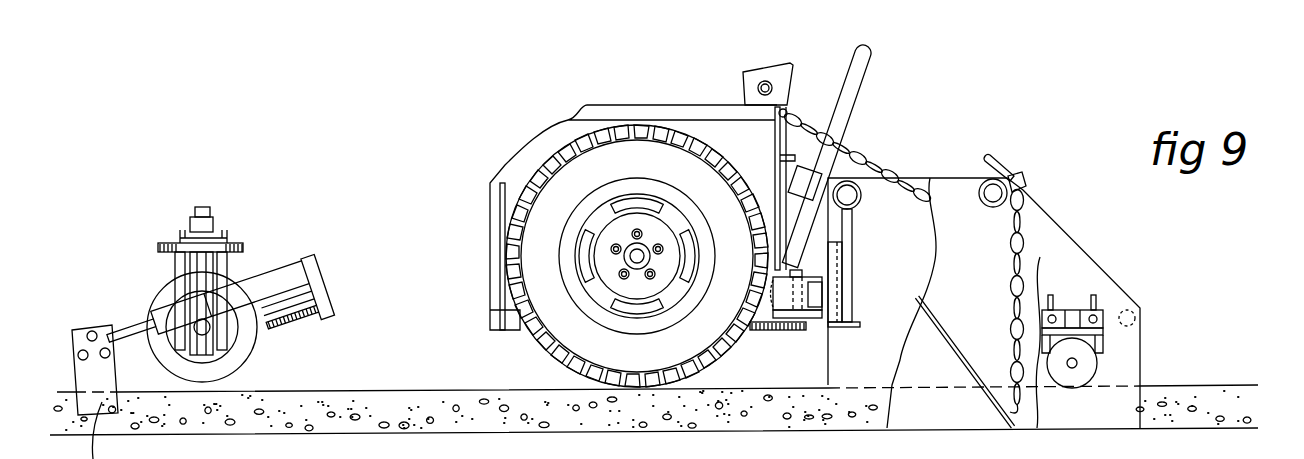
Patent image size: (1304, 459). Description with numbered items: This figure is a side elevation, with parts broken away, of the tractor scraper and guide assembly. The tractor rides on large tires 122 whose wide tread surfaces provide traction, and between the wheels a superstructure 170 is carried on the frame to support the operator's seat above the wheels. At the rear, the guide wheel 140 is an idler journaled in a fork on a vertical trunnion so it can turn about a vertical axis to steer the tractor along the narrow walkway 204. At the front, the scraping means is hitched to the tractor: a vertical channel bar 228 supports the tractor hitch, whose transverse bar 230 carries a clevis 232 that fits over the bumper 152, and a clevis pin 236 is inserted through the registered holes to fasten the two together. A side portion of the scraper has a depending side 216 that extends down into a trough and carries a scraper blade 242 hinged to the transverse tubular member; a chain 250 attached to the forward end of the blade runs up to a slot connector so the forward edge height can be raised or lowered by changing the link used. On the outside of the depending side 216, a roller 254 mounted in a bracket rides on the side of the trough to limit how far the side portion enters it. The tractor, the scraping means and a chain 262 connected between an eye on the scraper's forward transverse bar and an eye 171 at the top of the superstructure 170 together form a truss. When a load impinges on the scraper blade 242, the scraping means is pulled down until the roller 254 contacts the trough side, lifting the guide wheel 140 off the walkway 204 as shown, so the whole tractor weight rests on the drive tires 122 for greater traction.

The tire 122 is at (562, 197).
The guide wheel 140 is at (243, 350).
The bumper 152 is at (777, 297).
The superstructure 170 is at (720, 133).
The eye 171 is at (798, 103).
The walkway 204 is at (380, 400).
The depending side 216 is at (1077, 263).
The vertical channel bar 228 is at (835, 250).
The transverse bar 230 is at (823, 297).
The clevis 232 is at (812, 320).
The clevis pin 236 is at (803, 275).
The scraper blade 242 is at (943, 317).
The chain 250 is at (1023, 228).
The roller 254 is at (1100, 370).
The chain 262 is at (847, 143).